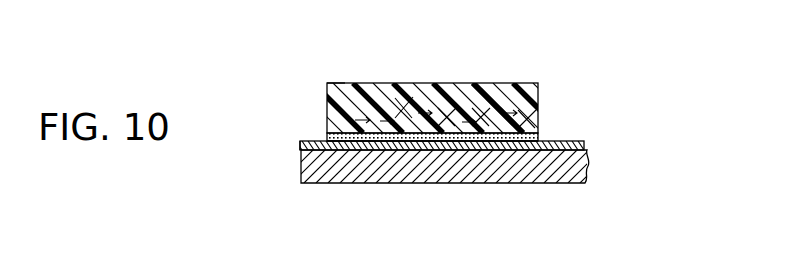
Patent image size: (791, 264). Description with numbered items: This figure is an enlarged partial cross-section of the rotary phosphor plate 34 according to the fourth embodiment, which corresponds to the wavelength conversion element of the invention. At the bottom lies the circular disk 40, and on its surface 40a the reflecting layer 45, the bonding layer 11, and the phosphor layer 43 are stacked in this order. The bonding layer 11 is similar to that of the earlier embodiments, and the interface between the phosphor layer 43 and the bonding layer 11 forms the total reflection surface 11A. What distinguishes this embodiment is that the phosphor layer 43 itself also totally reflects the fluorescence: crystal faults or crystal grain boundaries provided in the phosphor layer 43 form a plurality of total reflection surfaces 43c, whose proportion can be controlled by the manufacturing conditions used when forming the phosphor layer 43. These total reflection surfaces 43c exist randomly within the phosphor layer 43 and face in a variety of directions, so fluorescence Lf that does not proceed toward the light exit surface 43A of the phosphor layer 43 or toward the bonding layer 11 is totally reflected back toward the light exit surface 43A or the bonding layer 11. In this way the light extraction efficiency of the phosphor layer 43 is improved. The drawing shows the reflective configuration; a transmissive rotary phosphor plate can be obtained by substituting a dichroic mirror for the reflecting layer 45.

The rotary phosphor plate 34 is at (559, 57).
The phosphor layer 43 is at (540, 93).
The light exit surface 43A is at (328, 84).
The total reflection surface 43c is at (494, 103).
The fluorescent light Lf is at (370, 119).
The total reflection surface 11A is at (333, 134).
The bonding layer 11 is at (541, 139).
The reflecting layer 45 is at (584, 145).
The surface of the circular disk 40a is at (300, 143).
The circular disk 40 is at (355, 168).